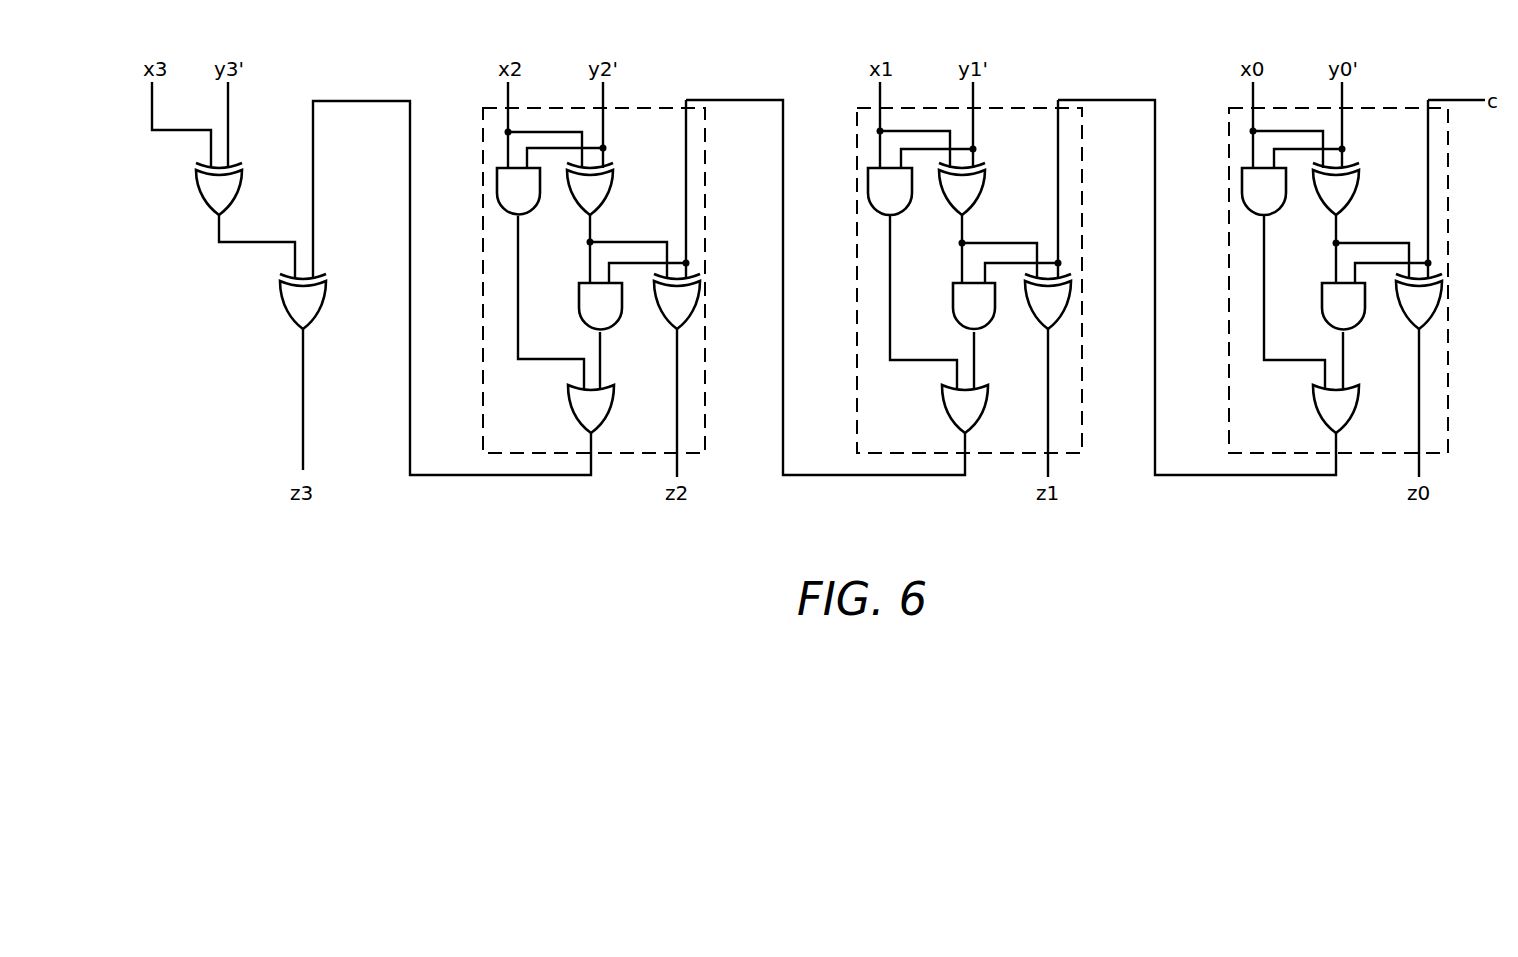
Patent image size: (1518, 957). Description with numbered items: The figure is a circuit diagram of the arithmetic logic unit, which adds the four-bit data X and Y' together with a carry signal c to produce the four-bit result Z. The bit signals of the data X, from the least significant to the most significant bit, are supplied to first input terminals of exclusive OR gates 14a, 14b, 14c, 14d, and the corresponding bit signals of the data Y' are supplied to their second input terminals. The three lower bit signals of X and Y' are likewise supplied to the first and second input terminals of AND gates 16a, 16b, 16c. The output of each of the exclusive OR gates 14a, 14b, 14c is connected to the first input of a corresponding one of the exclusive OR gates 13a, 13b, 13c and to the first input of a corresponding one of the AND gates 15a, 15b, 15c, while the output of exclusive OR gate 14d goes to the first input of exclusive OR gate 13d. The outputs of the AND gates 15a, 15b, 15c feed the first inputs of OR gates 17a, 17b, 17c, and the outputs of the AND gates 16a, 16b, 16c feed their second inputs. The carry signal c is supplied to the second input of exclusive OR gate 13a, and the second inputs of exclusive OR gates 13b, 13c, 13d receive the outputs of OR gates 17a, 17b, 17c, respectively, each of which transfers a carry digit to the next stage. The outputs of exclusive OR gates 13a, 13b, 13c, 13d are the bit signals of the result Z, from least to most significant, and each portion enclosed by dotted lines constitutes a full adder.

The exclusive OR gate 13a is at (1439, 299).
The exclusive OR gate 13b is at (1068, 305).
The exclusive OR gate 13c is at (697, 305).
The exclusive OR gate 13d is at (322, 306).
The exclusive OR gate 14a is at (1356, 190).
The exclusive OR gate 14b is at (982, 190).
The exclusive OR gate 14c is at (610, 190).
The exclusive OR gate 14d is at (238, 190).
The AND gate 15a is at (1322, 305).
The AND gate 15b is at (953, 305).
The AND gate 15c is at (579, 305).
The AND gate 16a is at (1242, 190).
The AND gate 16b is at (868, 192).
The AND gate 16c is at (497, 190).
The OR gate 17a is at (1320, 414).
The OR gate 17b is at (948, 418).
The OR gate 17c is at (574, 418).